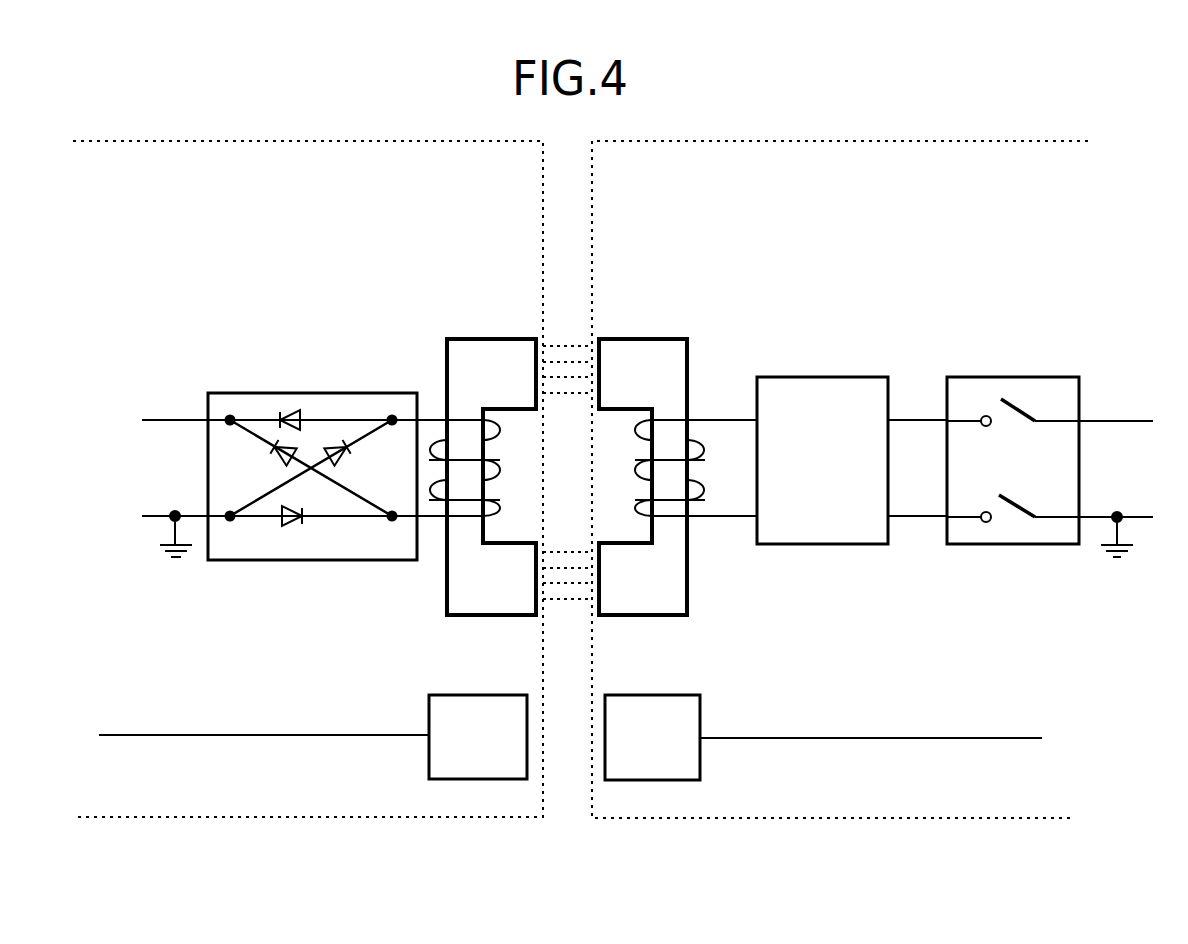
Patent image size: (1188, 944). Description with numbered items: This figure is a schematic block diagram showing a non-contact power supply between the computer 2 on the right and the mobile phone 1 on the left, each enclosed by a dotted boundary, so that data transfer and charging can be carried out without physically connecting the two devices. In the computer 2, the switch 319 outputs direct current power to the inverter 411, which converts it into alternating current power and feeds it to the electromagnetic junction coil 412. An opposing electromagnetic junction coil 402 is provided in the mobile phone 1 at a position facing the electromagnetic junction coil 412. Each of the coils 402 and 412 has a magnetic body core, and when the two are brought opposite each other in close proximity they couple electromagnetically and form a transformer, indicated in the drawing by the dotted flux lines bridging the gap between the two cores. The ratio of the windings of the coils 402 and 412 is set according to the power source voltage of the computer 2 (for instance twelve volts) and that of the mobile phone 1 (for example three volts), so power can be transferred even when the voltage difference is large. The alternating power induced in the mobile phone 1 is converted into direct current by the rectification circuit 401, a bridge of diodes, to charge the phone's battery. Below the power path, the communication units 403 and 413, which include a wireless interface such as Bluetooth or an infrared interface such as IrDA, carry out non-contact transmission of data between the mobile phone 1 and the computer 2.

The mobile phone 1 is at (178, 817).
The computer 2 is at (668, 818).
The rectification circuit 401 is at (230, 562).
The electromagnetic junction coil 402 is at (478, 337).
The communication unit 403 is at (429, 757).
The inverter 411 is at (820, 377).
The electromagnetic junction coil 412 is at (650, 338).
The communication unit 413 is at (700, 762).
The switch 319 is at (1005, 377).